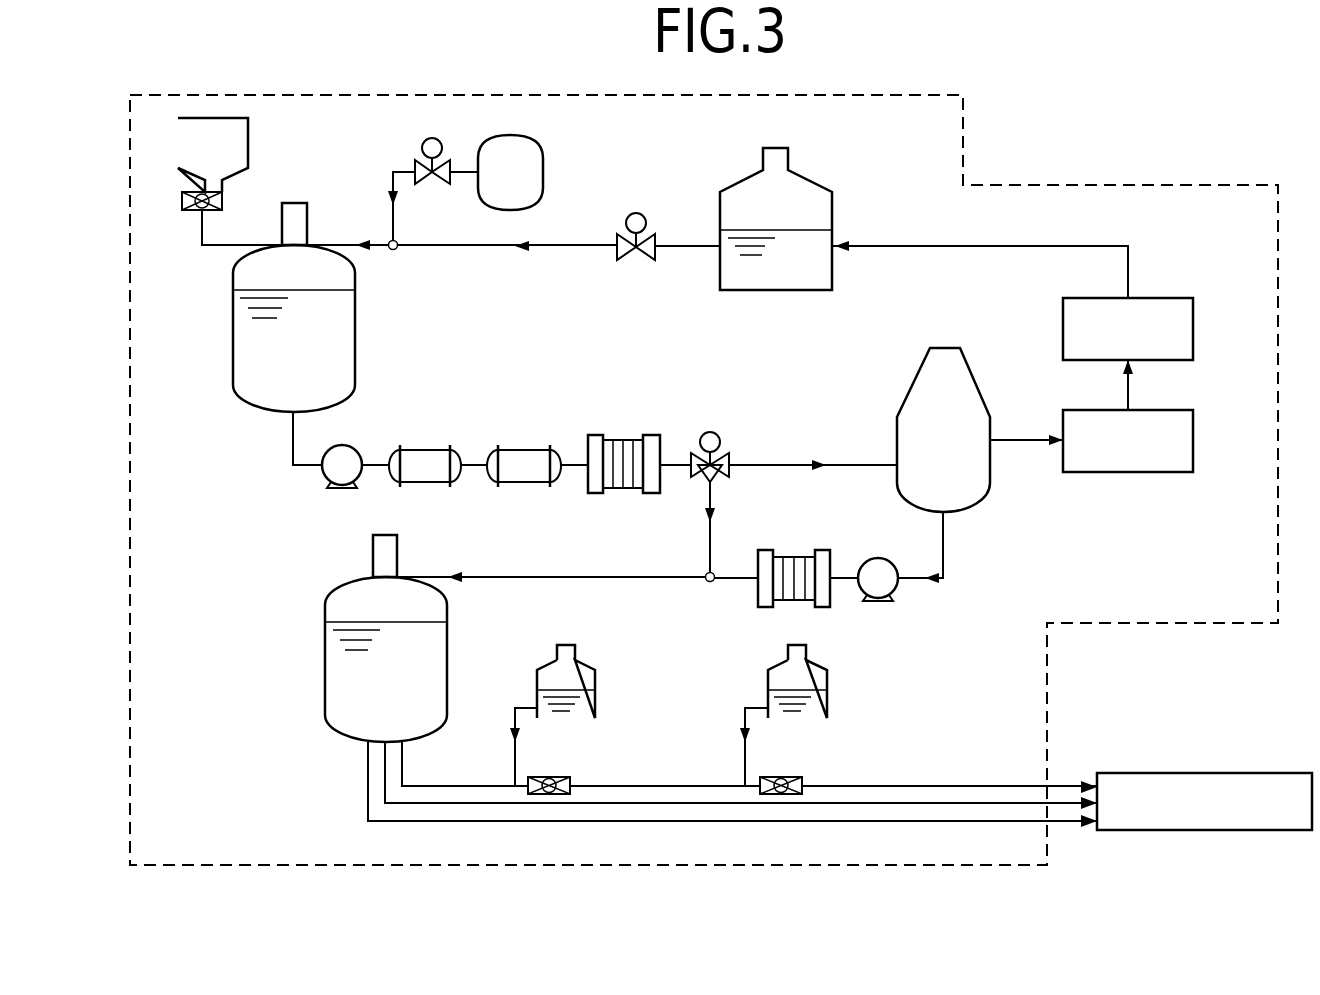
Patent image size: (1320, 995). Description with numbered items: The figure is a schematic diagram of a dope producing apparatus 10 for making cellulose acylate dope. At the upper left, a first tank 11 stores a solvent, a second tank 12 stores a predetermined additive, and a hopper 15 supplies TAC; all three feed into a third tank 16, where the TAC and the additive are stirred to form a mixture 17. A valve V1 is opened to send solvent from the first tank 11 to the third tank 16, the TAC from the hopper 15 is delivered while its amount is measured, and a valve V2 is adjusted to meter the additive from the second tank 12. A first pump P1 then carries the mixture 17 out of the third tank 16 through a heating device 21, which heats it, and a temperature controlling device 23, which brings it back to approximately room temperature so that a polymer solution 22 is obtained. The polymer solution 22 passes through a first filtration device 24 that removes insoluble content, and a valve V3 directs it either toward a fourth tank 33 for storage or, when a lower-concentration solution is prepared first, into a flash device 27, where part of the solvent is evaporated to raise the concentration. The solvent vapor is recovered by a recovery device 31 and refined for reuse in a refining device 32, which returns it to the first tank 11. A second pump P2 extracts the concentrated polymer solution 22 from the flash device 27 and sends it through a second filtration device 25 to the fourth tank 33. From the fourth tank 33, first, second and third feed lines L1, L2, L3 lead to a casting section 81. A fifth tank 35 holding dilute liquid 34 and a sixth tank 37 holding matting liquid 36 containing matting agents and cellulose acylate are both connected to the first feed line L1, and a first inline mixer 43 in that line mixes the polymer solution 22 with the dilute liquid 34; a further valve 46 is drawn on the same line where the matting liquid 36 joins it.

The dope producing apparatus 10 is at (997, 178).
The first tank 11 is at (832, 210).
The second tank 12 is at (543, 172).
The hopper 15 is at (248, 143).
The third tank 16 is at (355, 283).
The mixture 17 is at (260, 388).
The heating device 21 is at (425, 450).
The polymer solution 22 is at (340, 710).
The temperature controlling device 23 is at (525, 450).
The first filtration device 24 is at (612, 440).
The second filtration device 25 is at (797, 552).
The flash device 27 is at (925, 392).
The recovery device 31 is at (1193, 445).
The refining device 32 is at (1193, 330).
The fourth tank 33 is at (330, 597).
The dilute liquid 34 is at (595, 705).
The fifth tank 35 is at (585, 665).
The matting liquid 36 is at (827, 705).
The sixth tank 37 is at (816, 665).
The first inline mixer 43 is at (541, 777).
The valve 46 is at (773, 777).
The casting section 81 is at (1193, 773).
The first pump P1 is at (346, 488).
The second pump P2 is at (893, 598).
The valve V1 is at (617, 253).
The valve V2 is at (437, 184).
The valve V3 is at (729, 470).
The first feed line L1 is at (440, 786).
The second feed line L2 is at (468, 805).
The third feed line L3 is at (420, 821).